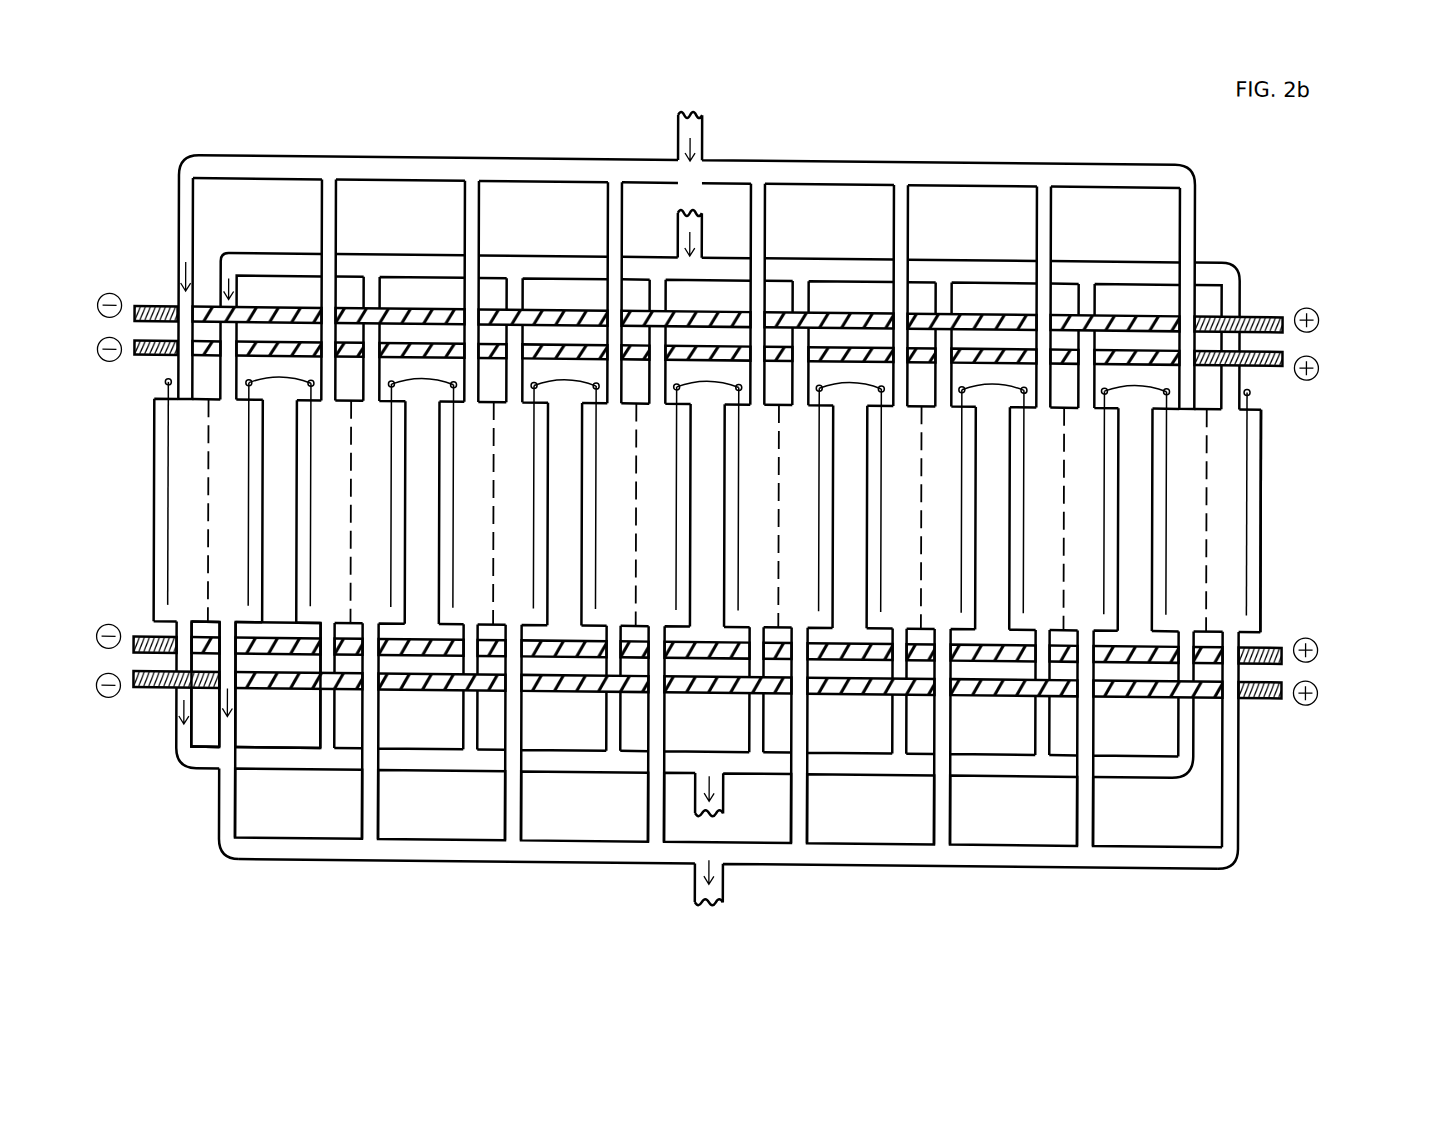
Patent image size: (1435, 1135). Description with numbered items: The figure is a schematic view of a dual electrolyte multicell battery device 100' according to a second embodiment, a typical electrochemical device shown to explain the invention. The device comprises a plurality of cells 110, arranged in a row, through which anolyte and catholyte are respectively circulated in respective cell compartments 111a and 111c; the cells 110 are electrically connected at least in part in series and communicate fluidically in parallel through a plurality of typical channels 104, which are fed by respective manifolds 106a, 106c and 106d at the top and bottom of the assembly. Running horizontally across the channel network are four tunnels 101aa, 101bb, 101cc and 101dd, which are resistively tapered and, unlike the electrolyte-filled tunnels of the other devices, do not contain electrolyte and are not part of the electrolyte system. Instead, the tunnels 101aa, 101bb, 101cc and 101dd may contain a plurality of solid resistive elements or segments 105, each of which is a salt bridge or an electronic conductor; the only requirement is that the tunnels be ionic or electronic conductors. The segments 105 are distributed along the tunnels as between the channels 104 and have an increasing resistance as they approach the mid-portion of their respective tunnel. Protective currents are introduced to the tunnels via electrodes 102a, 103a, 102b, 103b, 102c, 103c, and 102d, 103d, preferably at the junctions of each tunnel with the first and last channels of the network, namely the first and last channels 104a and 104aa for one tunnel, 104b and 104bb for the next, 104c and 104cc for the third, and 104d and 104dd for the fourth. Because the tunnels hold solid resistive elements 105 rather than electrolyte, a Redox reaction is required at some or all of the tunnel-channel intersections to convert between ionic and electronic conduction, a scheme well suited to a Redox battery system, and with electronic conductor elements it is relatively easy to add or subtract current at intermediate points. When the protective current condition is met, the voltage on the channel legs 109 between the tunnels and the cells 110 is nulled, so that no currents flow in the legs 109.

The electrochemical device 100' is at (1341, 522).
The tunnel 101aa is at (212, 302).
The tunnel 101bb is at (166, 384).
The tunnel 101cc is at (208, 623).
The tunnel 101dd is at (252, 690).
The electrode 102a is at (137, 310).
The electrode 102b is at (150, 355).
The electrode 102c is at (150, 642).
The electrode 102d is at (150, 688).
The electrode 103a is at (1248, 307).
The electrode 103b is at (1262, 342).
The electrode 103c is at (1250, 634).
The electrode 103d is at (1250, 687).
The channel 104 is at (1178, 196).
The first channel 104a is at (178, 200).
The last channel 104aa is at (1198, 233).
The first channel 104b is at (252, 385).
The last channel 104bb is at (1250, 380).
The first channel 104c is at (168, 737).
The last channel 104cc is at (1198, 752).
The first channel 104d is at (218, 810).
The last channel 104dd is at (1240, 800).
The solid resistive element 105 is at (417, 654).
The manifold 106a is at (862, 155).
The manifold 106c is at (1035, 767).
The manifold 106d is at (1005, 858).
The channel leg 109 is at (787, 660).
The cell 110 is at (1231, 557).
The cell compartment 111a is at (1183, 453).
The cell compartment 111c is at (1235, 480).